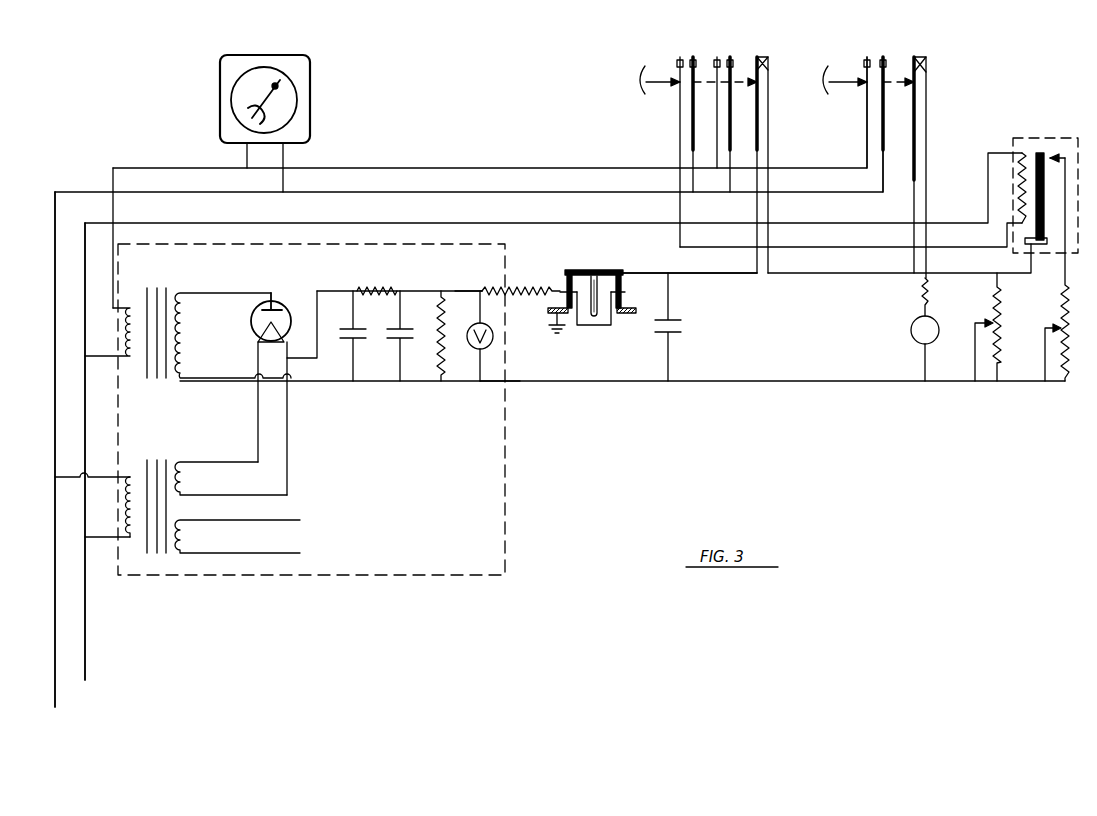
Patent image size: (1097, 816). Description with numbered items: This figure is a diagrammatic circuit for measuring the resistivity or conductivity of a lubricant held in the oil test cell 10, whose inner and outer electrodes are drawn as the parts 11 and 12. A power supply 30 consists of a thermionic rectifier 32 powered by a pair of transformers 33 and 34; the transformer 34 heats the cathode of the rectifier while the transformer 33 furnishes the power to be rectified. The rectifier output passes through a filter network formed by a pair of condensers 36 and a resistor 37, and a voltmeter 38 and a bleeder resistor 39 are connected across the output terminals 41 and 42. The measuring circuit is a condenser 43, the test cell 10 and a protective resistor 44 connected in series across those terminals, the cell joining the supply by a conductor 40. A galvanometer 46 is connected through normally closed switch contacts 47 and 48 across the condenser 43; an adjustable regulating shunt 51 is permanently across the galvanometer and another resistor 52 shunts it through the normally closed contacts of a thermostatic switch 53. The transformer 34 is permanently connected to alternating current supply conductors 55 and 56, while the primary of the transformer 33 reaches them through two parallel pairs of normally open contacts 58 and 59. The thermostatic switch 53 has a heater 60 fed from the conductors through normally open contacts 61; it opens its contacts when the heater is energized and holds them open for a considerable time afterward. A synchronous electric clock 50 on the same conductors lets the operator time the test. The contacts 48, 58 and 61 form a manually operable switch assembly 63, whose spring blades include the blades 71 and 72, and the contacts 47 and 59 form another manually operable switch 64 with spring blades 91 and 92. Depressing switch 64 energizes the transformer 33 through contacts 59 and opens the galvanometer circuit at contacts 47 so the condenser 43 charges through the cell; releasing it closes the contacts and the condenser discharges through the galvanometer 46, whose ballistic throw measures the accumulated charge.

The oil test cell 10 is at (594, 344).
The inner electrode 11 is at (596, 322).
The outer electrode 12 is at (609, 318).
The power supply 30 is at (505, 478).
The thermionic rectifier 32 is at (278, 305).
The transformer 33 is at (167, 380).
The transformer 34 is at (140, 462).
The condensers 36 is at (398, 341).
The resistor 37 is at (378, 291).
The voltmeter 38 is at (475, 348).
The bleeder resistor 39 is at (439, 357).
The conductor 40 is at (640, 273).
The output terminal 41 is at (472, 291).
The output terminal 42 is at (497, 382).
The condenser 43 is at (680, 333).
The protective resistor 44 is at (525, 291).
The galvanometer 46 is at (920, 341).
The switch contacts 47 is at (944, 151).
The switch contacts 48 is at (783, 148).
The synchronous electric clock 50 is at (305, 98).
The adjustable regulating shunt 51 is at (1003, 330).
The resistor 52 is at (1068, 336).
The thermostatic switch 53 is at (1044, 152).
The alternating current supply conductor 55 is at (52, 583).
The alternating current supply conductor 56 is at (85, 620).
The normally open contacts 58 is at (720, 56).
The normally open contacts 59 is at (872, 56).
The heater 60 is at (1023, 152).
The normally open contacts 61 is at (685, 56).
The manually operable switch assembly 63 is at (681, 60).
The manually operable switch 64 is at (857, 60).
The spring blade 71 is at (757, 118).
The spring blade 72 is at (768, 138).
The spring blade 91 is at (916, 103).
The spring blade 92 is at (927, 122).